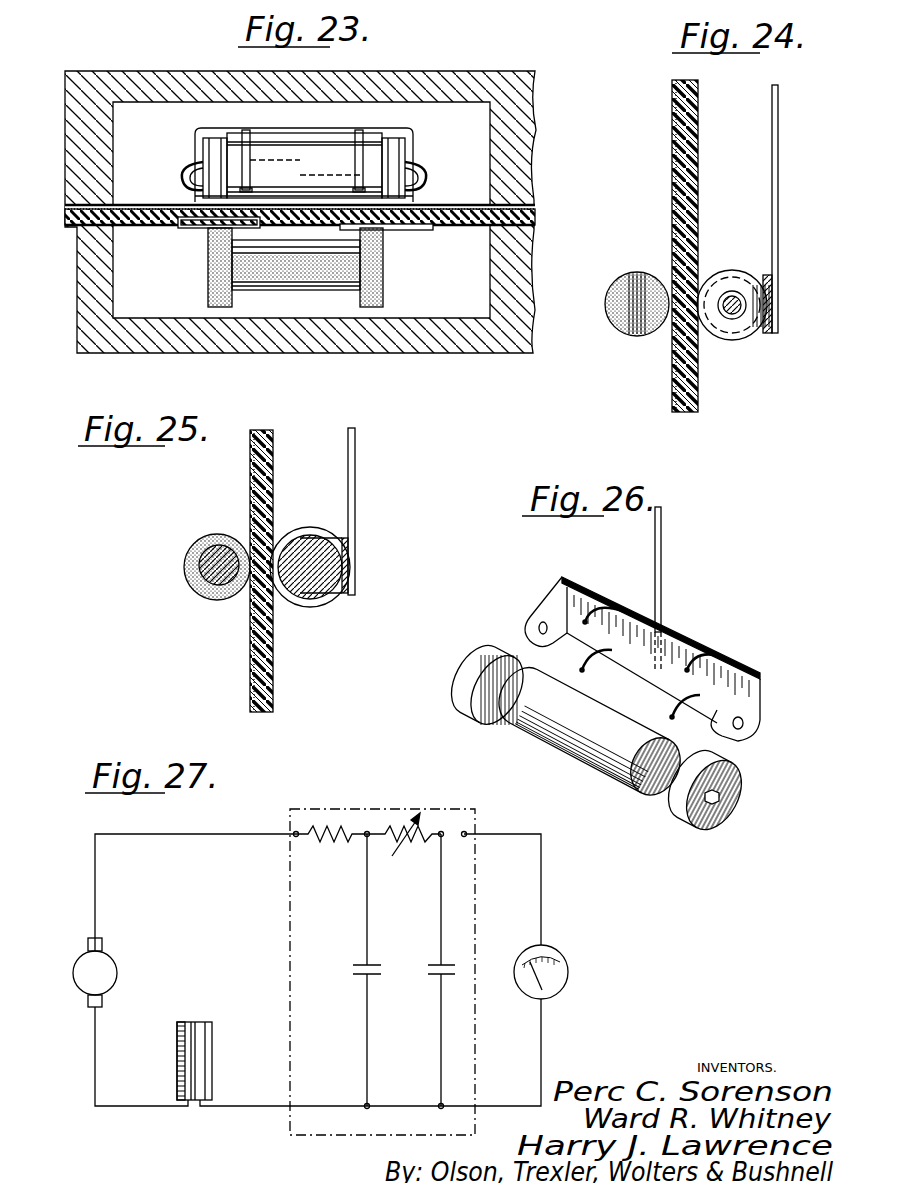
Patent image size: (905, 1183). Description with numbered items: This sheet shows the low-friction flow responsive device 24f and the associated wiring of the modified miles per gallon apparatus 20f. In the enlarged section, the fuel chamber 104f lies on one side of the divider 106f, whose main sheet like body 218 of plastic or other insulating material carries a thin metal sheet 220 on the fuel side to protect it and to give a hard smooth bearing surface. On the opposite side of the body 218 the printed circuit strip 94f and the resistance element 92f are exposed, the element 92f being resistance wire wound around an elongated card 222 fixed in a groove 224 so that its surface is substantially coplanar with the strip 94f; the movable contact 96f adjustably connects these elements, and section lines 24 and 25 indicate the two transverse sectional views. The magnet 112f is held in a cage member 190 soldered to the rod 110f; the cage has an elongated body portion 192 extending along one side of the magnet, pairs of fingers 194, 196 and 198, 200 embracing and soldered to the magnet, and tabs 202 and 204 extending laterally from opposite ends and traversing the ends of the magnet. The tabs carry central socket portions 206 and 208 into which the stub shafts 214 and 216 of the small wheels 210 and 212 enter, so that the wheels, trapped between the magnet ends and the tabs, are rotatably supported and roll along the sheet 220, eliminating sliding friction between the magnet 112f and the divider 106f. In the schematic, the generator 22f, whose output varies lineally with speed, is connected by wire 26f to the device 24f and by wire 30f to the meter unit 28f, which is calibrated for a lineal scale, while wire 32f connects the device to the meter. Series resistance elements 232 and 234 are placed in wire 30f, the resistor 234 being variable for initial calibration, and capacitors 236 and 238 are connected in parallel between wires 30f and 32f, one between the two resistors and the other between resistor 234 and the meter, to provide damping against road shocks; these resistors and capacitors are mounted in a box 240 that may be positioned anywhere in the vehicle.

In FIG. 23, the fuel chamber 104f is at (472, 112).
In FIG. 23, the divider 106f is at (462, 202).
In FIG. 24, the divider 106f is at (672, 391).
In FIG. 25, the divider 106f is at (276, 662).
In FIG. 23, the rod 110f is at (303, 125).
In FIG. 24, the rod 110f is at (772, 218).
In FIG. 25, the rod 110f is at (355, 478).
In FIG. 26, the rod 110f is at (663, 578).
In FIG. 23, the magnet 112f is at (304, 165).
In FIG. 25, the magnet 112f is at (313, 566).
In FIG. 26, the magnet 112f is at (618, 775).
In FIG. 23, the resistance element 92f is at (185, 228).
In FIG. 25, the resistance element 92f is at (250, 622).
In FIG. 23, the printed circuit strip 94f is at (403, 233).
In FIG. 24, the printed circuit strip 94f is at (672, 207).
In FIG. 24, the contact 96f is at (635, 310).
In FIG. 25, the contact 96f is at (198, 583).
In FIG. 26, the cage member 190 is at (686, 635).
In FIG. 26, the elongated body portion 192 is at (705, 645).
In FIG. 26, the finger 194 is at (597, 612).
In FIG. 26, the finger 196 is at (603, 672).
In FIG. 26, the finger 198 is at (725, 660).
In FIG. 26, the finger 200 is at (667, 703).
In FIG. 26, the tab 202 is at (541, 598).
In FIG. 26, the tab 204 is at (752, 722).
In FIG. 26, the socket portion 206 is at (535, 624).
In FIG. 26, the socket portion 208 is at (746, 718).
In FIG. 23, the wheel 210 is at (213, 152).
In FIG. 25, the wheel 210 is at (283, 543).
In FIG. 26, the wheel 210 is at (465, 712).
In FIG. 23, the wheel 212 is at (393, 150).
In FIG. 24, the wheel 212 is at (737, 335).
In FIG. 26, the wheel 212 is at (702, 825).
In FIG. 26, the stub shaft 214 is at (466, 670).
In FIG. 24, the stub shaft 216 is at (740, 308).
In FIG. 26, the stub shaft 216 is at (722, 800).
In FIG. 23, the sheet like body 218 is at (530, 220).
In FIG. 24, the sheet like body 218 is at (683, 405).
In FIG. 25, the sheet like body 218 is at (262, 647).
In FIG. 23, the sheet 220 is at (442, 205).
In FIG. 24, the sheet 220 is at (698, 150).
In FIG. 25, the sheet 220 is at (270, 692).
In FIG. 23, the card 222 is at (205, 227).
In FIG. 23, the groove 224 is at (200, 168).
In FIG. 23, the section line 24— 24 is at (377, 113).
In FIG. 23, the section line 25— 25 is at (280, 113).
In FIG. 27, the miles per gallon apparatus 20f is at (251, 828).
In FIG. 27, the generator 22f is at (117, 960).
In FIG. 27, the flow responsive device 24f is at (212, 1030).
In FIG. 27, the wire 26f is at (116, 1108).
In FIG. 27, the meter unit 28f is at (560, 985).
In FIG. 27, the wire 30f is at (170, 836).
In FIG. 27, the wire 32f is at (325, 1118).
In FIG. 27, the resistance element 232 is at (334, 826).
In FIG. 27, the variable resistor 234 is at (420, 814).
In FIG. 27, the capacitor 236 is at (355, 978).
In FIG. 27, the capacitor 238 is at (430, 978).
In FIG. 27, the box 240 is at (475, 815).